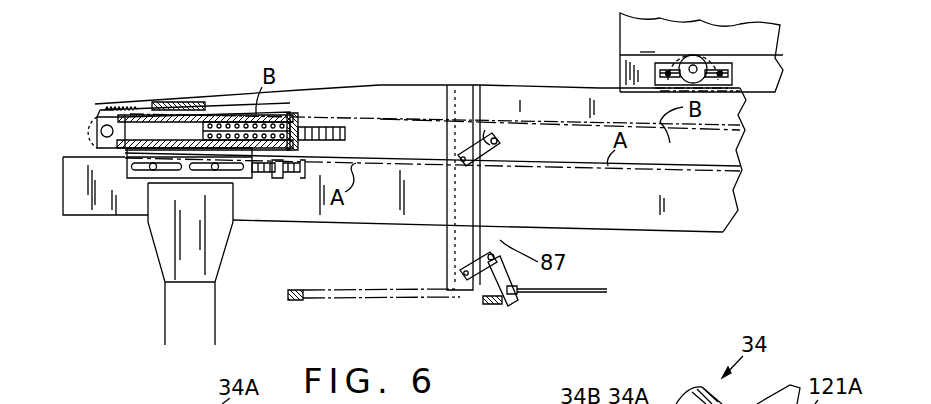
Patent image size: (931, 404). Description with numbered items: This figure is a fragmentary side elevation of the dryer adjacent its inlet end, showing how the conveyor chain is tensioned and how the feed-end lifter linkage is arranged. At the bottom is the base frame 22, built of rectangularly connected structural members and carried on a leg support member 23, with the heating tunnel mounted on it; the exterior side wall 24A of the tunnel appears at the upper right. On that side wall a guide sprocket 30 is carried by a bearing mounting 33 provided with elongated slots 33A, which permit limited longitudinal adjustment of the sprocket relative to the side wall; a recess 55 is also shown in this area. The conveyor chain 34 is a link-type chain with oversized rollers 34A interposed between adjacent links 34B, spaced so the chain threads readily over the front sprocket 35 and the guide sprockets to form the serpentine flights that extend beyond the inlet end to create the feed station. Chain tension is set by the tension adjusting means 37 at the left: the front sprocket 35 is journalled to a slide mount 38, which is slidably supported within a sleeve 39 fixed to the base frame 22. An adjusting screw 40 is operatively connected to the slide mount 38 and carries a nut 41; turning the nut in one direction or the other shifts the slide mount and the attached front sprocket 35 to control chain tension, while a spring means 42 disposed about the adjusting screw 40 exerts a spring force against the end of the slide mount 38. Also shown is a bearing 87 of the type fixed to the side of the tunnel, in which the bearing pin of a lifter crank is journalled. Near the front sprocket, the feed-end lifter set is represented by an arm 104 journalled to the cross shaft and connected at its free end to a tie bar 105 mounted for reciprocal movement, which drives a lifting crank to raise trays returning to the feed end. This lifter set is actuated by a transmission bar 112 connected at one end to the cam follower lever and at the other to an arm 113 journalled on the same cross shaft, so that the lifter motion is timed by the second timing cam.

The base frame 22 is at (279, 205).
The leg support member 23 is at (208, 322).
The exterior side wall 24A is at (627, 33).
The guide sprocket 30 is at (693, 63).
The bearing mounting 33 is at (730, 65).
The elongated slots 33A is at (668, 74).
The chain 34 is at (128, 104).
The oversized rollers 34A is at (198, 114).
The link 34B is at (152, 101).
The front sprocket 35 is at (90, 132).
The tension adjusting means 37 is at (78, 110).
The slide mount 38 is at (132, 135).
The sleeve 39 is at (290, 112).
The adjusting screw 40 is at (345, 134).
The nut 41 is at (304, 130).
The spring means 42 is at (224, 121).
The recess 55 is at (640, 52).
The bearing 87 is at (495, 135).
The arms 104 is at (485, 305).
The tie bar 105 is at (462, 232).
The transmission bar 112 is at (566, 292).
The arm 113 is at (508, 272).